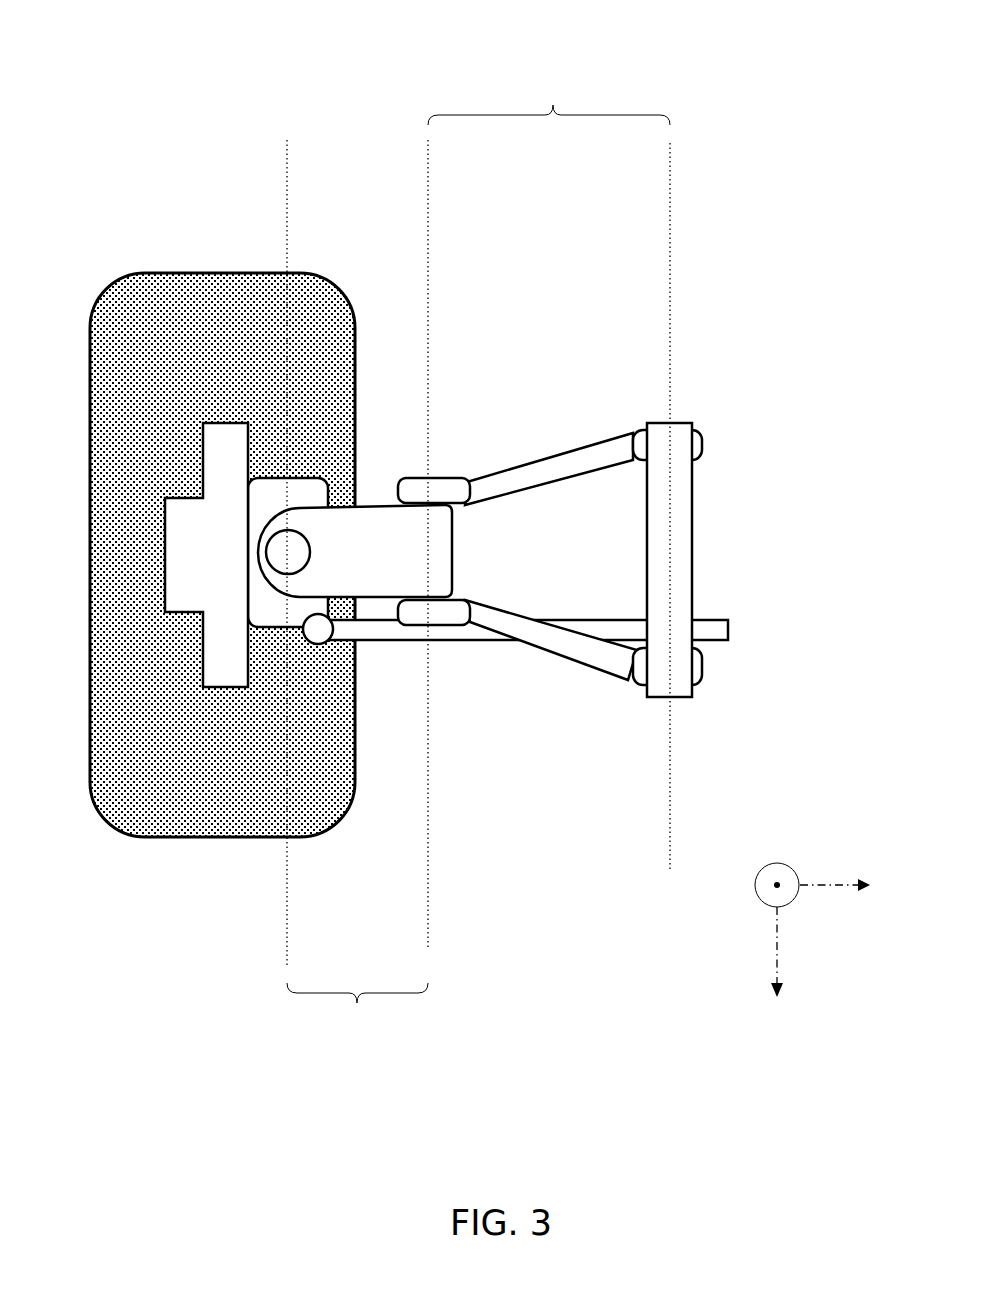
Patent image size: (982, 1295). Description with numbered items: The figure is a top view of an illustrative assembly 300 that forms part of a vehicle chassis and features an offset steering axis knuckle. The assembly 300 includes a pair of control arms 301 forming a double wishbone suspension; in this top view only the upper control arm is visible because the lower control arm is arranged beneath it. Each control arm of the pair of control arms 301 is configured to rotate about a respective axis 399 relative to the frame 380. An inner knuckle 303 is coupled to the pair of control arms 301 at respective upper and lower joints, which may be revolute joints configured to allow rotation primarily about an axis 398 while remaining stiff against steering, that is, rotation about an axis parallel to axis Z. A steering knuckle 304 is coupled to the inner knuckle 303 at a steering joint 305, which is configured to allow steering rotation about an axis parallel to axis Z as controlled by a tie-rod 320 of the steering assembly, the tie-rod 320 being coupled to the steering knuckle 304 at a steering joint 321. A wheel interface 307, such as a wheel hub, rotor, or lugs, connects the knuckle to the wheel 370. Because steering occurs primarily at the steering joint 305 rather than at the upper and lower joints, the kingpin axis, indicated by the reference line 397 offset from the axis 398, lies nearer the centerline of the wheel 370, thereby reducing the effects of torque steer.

The assembly 300 is at (80, 40).
The pair of control arms 301 is at (560, 453).
The inner knuckle 303 is at (403, 564).
The steering knuckle 304 is at (288, 478).
The steering joint 305 is at (310, 535).
The wheel interface 307 is at (225, 688).
The tie-rod 320 is at (730, 636).
The steering joint 321 is at (325, 645).
The wheel 370 is at (193, 380).
The frame 380 is at (692, 567).
The steering axis 397 is at (287, 198).
The axis 398 is at (428, 270).
The axis 399 is at (670, 175).